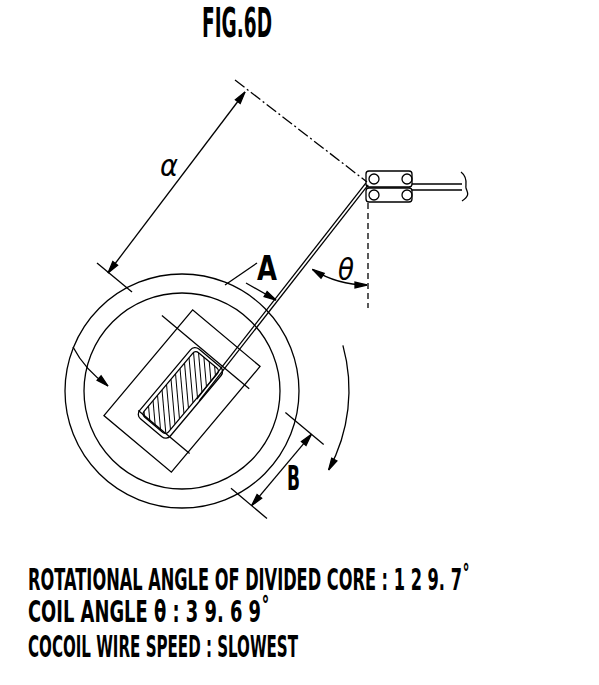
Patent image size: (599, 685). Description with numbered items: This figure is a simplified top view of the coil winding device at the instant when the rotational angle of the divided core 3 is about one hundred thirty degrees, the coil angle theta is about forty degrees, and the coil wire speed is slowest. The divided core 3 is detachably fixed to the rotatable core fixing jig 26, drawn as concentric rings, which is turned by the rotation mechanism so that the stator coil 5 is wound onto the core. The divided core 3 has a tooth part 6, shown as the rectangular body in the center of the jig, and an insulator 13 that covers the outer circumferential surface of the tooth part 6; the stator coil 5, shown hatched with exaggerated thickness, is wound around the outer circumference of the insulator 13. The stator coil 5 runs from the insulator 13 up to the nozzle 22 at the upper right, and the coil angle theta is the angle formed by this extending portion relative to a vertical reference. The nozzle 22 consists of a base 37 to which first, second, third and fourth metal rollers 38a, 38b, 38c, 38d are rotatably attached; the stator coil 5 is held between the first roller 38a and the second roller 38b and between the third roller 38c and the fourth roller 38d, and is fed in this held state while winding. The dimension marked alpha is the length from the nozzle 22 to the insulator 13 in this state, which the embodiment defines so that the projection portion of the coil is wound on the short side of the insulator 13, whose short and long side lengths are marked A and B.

The divided core 3 is at (73, 347).
The stator coil 5 is at (303, 266).
The tooth part 6 is at (155, 355).
The insulator 13 is at (165, 365).
The nozzle 22 is at (396, 160).
The core fixing jig 26 is at (212, 290).
The base 37 is at (390, 203).
The first roller 38a is at (412, 173).
The second roller 38b is at (410, 200).
The third roller 38c is at (369, 176).
The fourth roller 38d is at (372, 203).